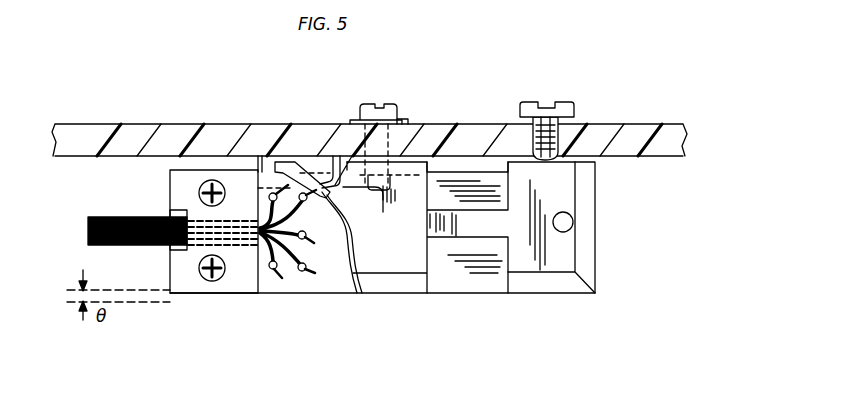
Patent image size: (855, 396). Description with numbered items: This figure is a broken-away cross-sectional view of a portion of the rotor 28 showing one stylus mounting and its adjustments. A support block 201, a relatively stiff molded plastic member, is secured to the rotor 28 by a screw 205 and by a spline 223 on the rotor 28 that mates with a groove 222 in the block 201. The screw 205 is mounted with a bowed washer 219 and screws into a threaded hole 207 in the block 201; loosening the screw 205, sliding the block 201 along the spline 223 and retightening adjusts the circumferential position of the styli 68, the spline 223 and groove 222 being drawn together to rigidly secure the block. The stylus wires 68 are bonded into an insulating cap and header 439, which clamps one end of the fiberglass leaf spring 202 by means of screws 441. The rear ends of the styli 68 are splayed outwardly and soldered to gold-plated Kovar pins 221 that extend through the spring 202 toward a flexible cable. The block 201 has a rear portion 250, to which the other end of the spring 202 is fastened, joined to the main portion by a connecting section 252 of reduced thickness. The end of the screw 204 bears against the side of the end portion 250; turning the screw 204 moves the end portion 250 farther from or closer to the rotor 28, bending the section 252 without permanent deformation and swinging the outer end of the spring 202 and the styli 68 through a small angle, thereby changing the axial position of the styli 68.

The rotor 28 is at (680, 100).
The styli 68 is at (88, 230).
The support block 201 is at (602, 301).
The stylus support member 202 is at (482, 283).
The screw 204 is at (575, 112).
The screw 205 is at (393, 108).
The threaded hole 207 is at (350, 140).
The bowed washer 219 is at (405, 121).
The Kovar pins 221 is at (270, 274).
The groove 222 is at (358, 234).
The spline 223 is at (315, 165).
The rear portion 250 is at (563, 201).
The connecting section 252 is at (455, 223).
The cap and header 439 is at (197, 282).
The screws 441 is at (233, 318).